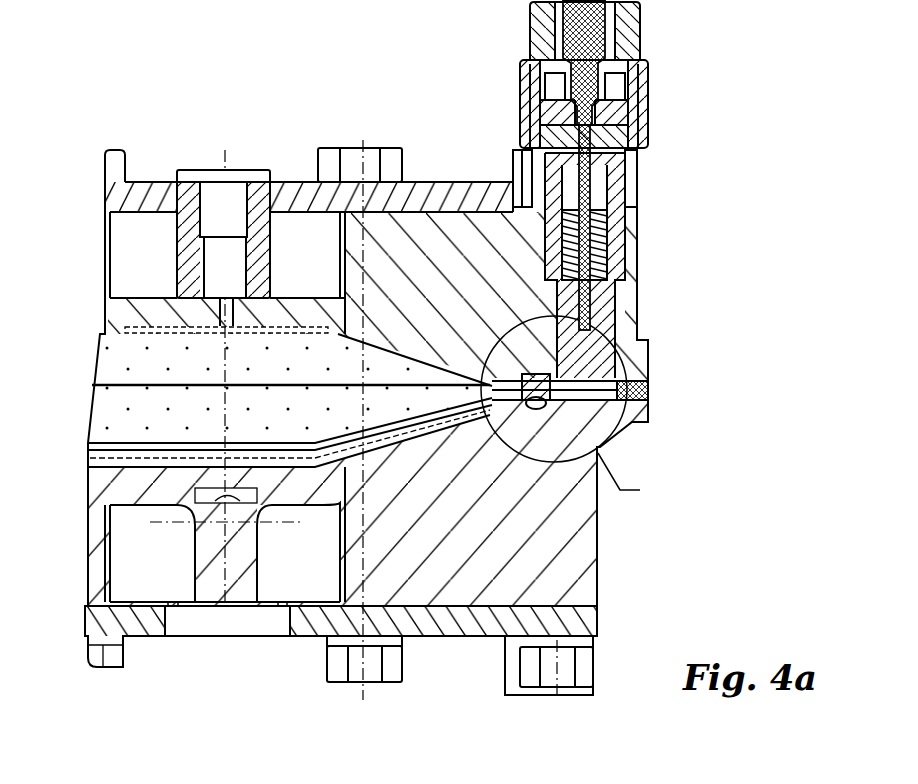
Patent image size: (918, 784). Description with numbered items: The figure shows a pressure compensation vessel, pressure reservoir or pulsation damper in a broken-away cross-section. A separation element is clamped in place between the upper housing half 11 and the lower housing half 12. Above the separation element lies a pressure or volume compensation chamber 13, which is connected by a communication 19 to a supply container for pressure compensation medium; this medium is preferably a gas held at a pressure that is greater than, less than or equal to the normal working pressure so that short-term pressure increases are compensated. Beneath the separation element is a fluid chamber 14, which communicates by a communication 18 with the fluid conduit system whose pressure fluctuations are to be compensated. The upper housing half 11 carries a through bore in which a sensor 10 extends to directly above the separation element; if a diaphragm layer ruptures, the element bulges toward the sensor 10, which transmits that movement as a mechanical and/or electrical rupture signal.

The sensor 10 is at (498, 60).
The upper housing half 11 is at (638, 301).
The lower housing half 12 is at (553, 564).
The pressure or volume compensation chamber 13 is at (240, 407).
The fluid chamber 14 is at (312, 467).
The communication 18 is at (244, 626).
The communication 19 is at (237, 207).